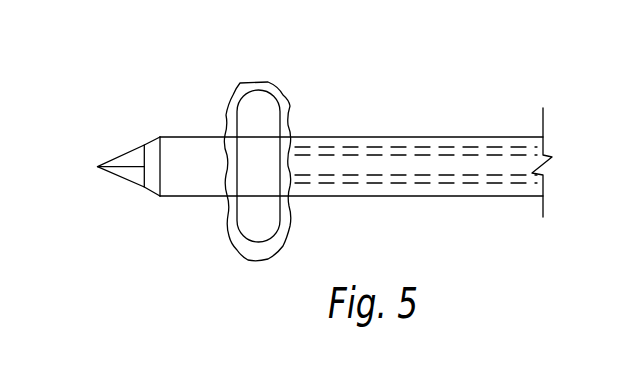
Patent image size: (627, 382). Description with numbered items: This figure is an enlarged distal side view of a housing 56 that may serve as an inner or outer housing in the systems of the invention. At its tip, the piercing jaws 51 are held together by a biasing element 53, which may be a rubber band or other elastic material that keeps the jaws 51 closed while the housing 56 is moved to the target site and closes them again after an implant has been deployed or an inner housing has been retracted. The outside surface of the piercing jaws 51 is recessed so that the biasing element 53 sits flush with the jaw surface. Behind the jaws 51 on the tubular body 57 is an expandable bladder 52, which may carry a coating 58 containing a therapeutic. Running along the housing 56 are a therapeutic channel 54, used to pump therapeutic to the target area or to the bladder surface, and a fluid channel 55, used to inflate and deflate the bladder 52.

The piercing jaws 51 is at (128, 155).
The expandable bladder 52 is at (249, 113).
The biasing element 53 is at (153, 188).
The therapeutic channel 54 is at (452, 153).
The fluid channel 55 is at (465, 177).
The housing 56 is at (400, 83).
The tubular body 57 is at (317, 197).
The coating 58 is at (260, 82).